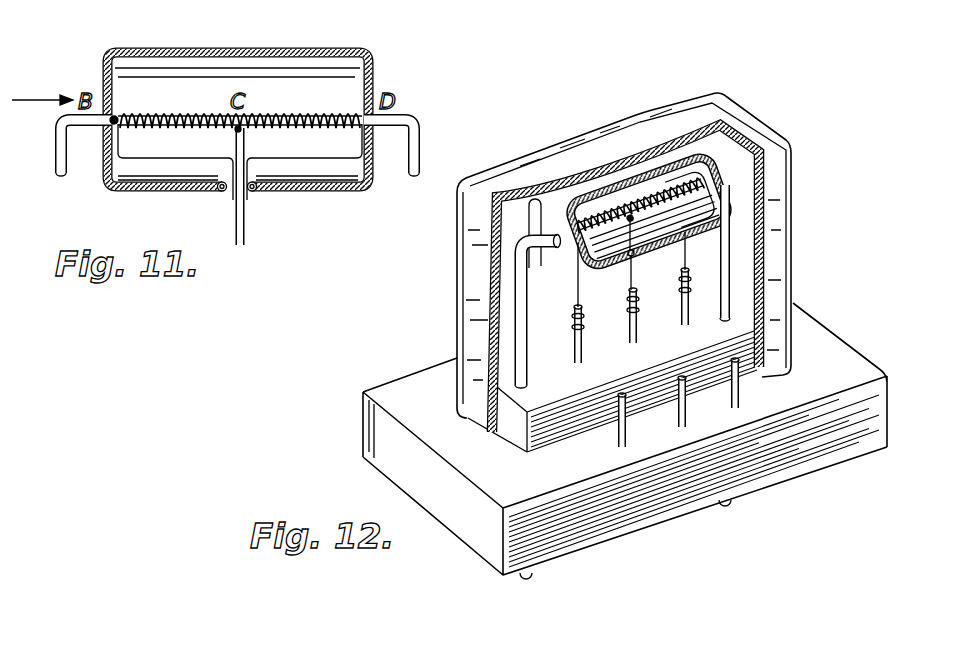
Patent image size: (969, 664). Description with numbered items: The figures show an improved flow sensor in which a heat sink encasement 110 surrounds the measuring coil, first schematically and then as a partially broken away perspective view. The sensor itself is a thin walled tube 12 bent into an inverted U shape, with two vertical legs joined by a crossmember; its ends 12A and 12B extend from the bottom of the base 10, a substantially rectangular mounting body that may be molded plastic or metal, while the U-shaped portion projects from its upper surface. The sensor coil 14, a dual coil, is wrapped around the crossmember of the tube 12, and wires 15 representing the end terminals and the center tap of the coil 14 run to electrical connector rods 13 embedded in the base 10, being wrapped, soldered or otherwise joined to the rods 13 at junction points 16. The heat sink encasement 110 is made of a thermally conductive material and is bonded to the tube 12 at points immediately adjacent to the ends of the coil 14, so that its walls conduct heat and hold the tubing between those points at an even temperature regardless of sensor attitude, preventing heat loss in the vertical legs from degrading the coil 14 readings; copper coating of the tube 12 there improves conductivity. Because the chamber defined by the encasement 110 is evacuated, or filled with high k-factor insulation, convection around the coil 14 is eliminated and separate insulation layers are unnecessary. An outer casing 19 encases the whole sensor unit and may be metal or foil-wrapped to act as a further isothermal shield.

In FIG. 12, the base portion 10 is at (385, 380).
In FIG. 11, the thin walled tube 12 is at (407, 115).
In FIG. 12, the thin walled tube 12 is at (514, 268).
In FIG. 12, the end of tube 12A is at (534, 577).
In FIG. 12, the end of tube 12B is at (735, 505).
In FIG. 12, the electrical connector rods 13 is at (610, 340).
In FIG. 11, the sensor coil 14 is at (283, 113).
In FIG. 12, the sensor coil 14 is at (640, 208).
In FIG. 11, the wires 15 is at (167, 158).
In FIG. 12, the junction points 16 is at (632, 268).
In FIG. 12, the outer casing 19 is at (580, 128).
In FIG. 11, the heat sink encasement 110 is at (106, 50).
In FIG. 12, the heat sink encasement 110 is at (667, 157).